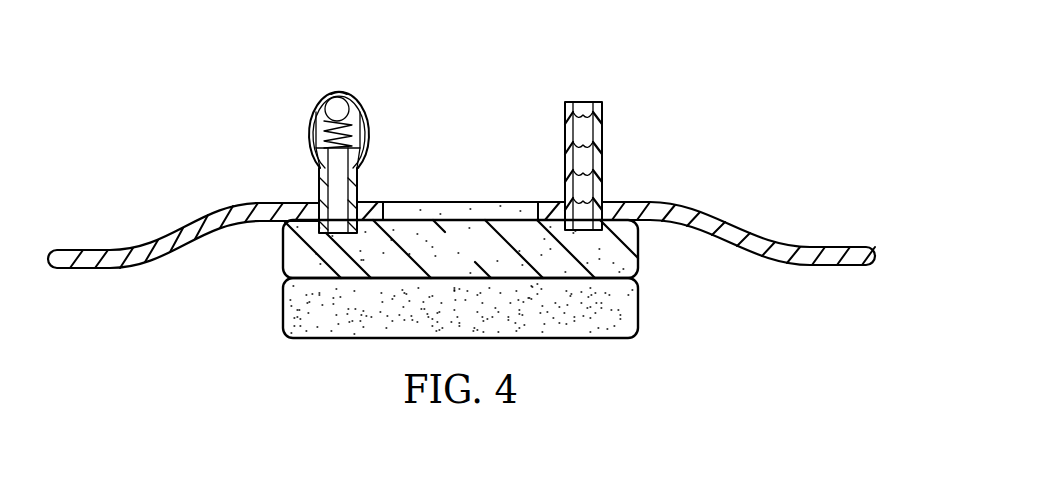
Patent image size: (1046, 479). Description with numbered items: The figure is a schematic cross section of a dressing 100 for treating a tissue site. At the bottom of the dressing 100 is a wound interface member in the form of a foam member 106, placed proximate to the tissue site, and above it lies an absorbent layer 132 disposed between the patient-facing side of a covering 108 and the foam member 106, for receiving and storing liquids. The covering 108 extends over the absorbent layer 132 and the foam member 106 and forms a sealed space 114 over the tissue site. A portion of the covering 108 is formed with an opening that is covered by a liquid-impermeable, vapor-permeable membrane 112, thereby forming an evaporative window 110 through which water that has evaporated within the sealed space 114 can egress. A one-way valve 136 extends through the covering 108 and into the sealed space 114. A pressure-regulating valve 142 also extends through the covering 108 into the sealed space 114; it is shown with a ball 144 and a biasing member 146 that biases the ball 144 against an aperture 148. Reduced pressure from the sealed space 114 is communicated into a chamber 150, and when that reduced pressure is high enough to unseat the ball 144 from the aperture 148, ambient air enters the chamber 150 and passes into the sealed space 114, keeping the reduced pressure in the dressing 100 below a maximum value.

The dressing 100 is at (713, 70).
The foam member 106 is at (485, 322).
The covering 108 is at (716, 205).
The evaporative window 110 is at (383, 210).
The liquid-impermeable, vapor-permeable membrane 112 is at (468, 197).
The sealed space 114 is at (556, 262).
The absorbent layer 132 is at (485, 262).
The one-way valve 136 is at (603, 128).
The pressure-regulating valve 142 is at (311, 118).
The ball 144 is at (378, 82).
The biasing member 146 is at (322, 132).
The aperture 148 is at (342, 90).
The chamber 150 is at (368, 112).